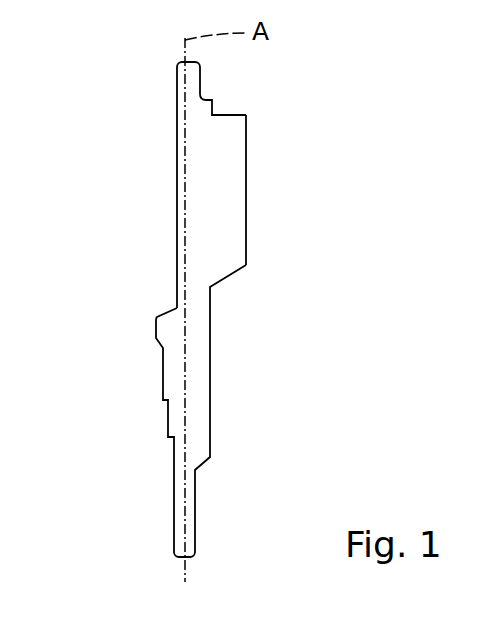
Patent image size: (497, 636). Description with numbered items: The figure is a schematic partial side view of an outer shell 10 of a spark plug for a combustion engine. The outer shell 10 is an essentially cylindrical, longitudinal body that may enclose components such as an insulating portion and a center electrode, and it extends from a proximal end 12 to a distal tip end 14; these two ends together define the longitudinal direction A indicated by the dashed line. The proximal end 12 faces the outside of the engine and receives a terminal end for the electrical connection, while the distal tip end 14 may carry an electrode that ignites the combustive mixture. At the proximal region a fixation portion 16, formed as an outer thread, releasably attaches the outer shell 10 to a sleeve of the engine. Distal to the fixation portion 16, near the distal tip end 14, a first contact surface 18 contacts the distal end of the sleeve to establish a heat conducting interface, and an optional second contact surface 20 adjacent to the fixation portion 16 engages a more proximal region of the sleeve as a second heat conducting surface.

The outer shell 10 is at (134, 67).
The proximal end 12 is at (220, 64).
The distal tip end 14 is at (218, 553).
The fixation portion 16 is at (266, 188).
The first contact surface 18 is at (224, 472).
The second contact surface 20 is at (242, 293).